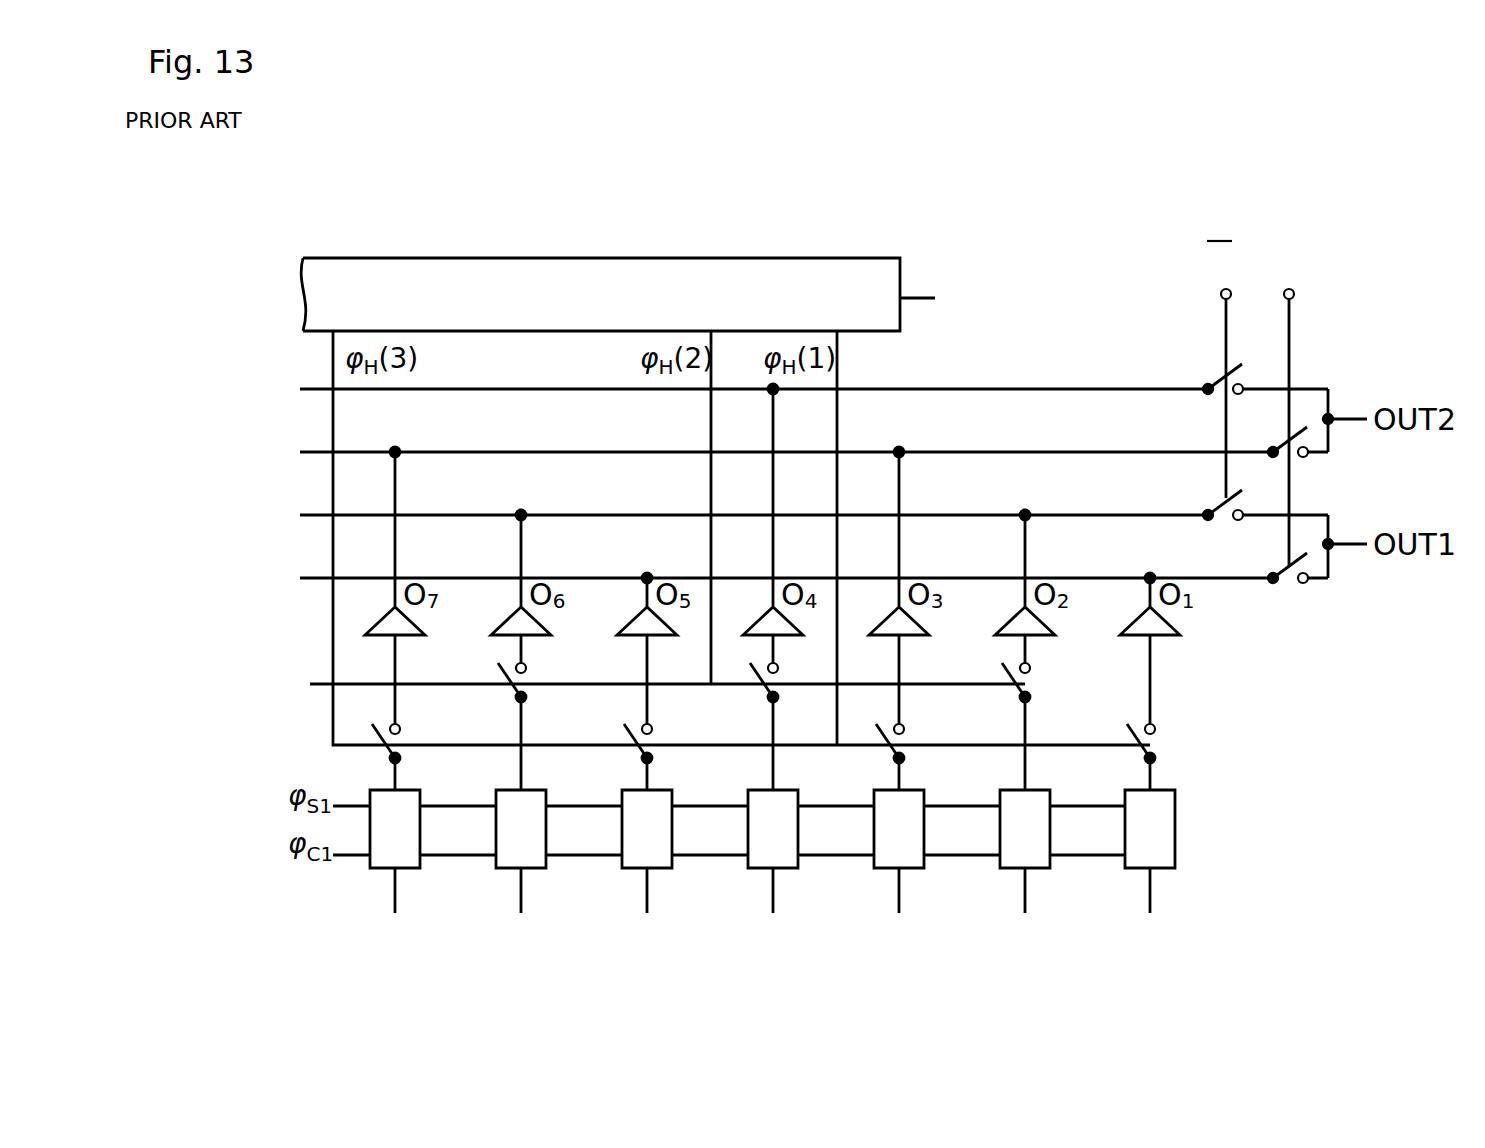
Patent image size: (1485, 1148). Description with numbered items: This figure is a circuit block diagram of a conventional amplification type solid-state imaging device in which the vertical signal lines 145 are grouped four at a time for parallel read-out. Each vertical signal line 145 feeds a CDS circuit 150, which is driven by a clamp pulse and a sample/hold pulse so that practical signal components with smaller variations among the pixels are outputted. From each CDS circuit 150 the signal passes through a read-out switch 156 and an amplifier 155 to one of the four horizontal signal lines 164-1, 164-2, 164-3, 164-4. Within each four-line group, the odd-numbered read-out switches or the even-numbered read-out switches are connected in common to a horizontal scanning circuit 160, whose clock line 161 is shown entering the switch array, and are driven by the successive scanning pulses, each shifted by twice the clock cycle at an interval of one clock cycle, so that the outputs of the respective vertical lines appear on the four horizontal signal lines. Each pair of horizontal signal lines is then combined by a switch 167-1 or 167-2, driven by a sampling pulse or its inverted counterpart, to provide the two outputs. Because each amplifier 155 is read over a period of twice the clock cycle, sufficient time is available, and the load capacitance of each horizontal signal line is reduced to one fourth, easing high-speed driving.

The horizontal scanning circuit 160 is at (840, 256).
The clock line 161 is at (838, 363).
The horizontal signal line 164-1 is at (1085, 578).
The horizontal signal line 164-2 is at (1085, 515).
The horizontal signal line 164-3 is at (1030, 452).
The horizontal signal line 164-4 is at (1030, 389).
The switch 167-1 is at (1310, 424).
The switch 167-2 is at (1222, 376).
The amplifier 155 is at (1181, 621).
The read-out switch 156 is at (1163, 742).
The CDS circuit 150 is at (1176, 830).
The vertical signal line 145 is at (1151, 892).